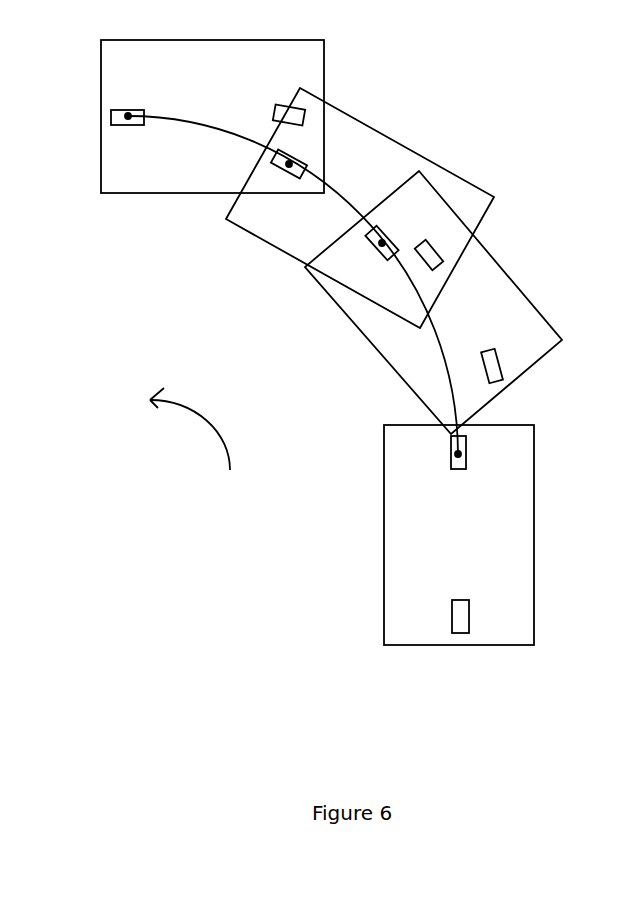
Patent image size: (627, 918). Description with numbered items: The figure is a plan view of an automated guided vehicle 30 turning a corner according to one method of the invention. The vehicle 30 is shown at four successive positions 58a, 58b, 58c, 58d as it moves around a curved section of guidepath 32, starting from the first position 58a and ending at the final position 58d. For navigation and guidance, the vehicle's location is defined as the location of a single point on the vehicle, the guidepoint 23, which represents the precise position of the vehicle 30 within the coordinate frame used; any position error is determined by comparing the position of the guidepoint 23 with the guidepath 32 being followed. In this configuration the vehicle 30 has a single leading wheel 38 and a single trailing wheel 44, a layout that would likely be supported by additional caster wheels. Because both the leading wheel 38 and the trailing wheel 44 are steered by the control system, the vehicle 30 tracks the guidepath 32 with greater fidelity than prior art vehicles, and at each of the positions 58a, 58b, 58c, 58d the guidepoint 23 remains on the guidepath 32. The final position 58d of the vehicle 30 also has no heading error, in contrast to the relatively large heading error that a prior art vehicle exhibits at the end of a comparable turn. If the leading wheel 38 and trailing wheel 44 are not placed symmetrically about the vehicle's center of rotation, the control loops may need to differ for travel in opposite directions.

The guidepoint 23 is at (126, 111).
The vehicle 30 is at (351, 341).
The guidepath 32 is at (176, 116).
The leading wheel 38 is at (126, 122).
The trailing wheel 44 is at (283, 104).
The first turn position 58a is at (382, 563).
The second turn position 58b is at (372, 352).
The third turn position 58c is at (265, 240).
The final position 58d is at (147, 191).